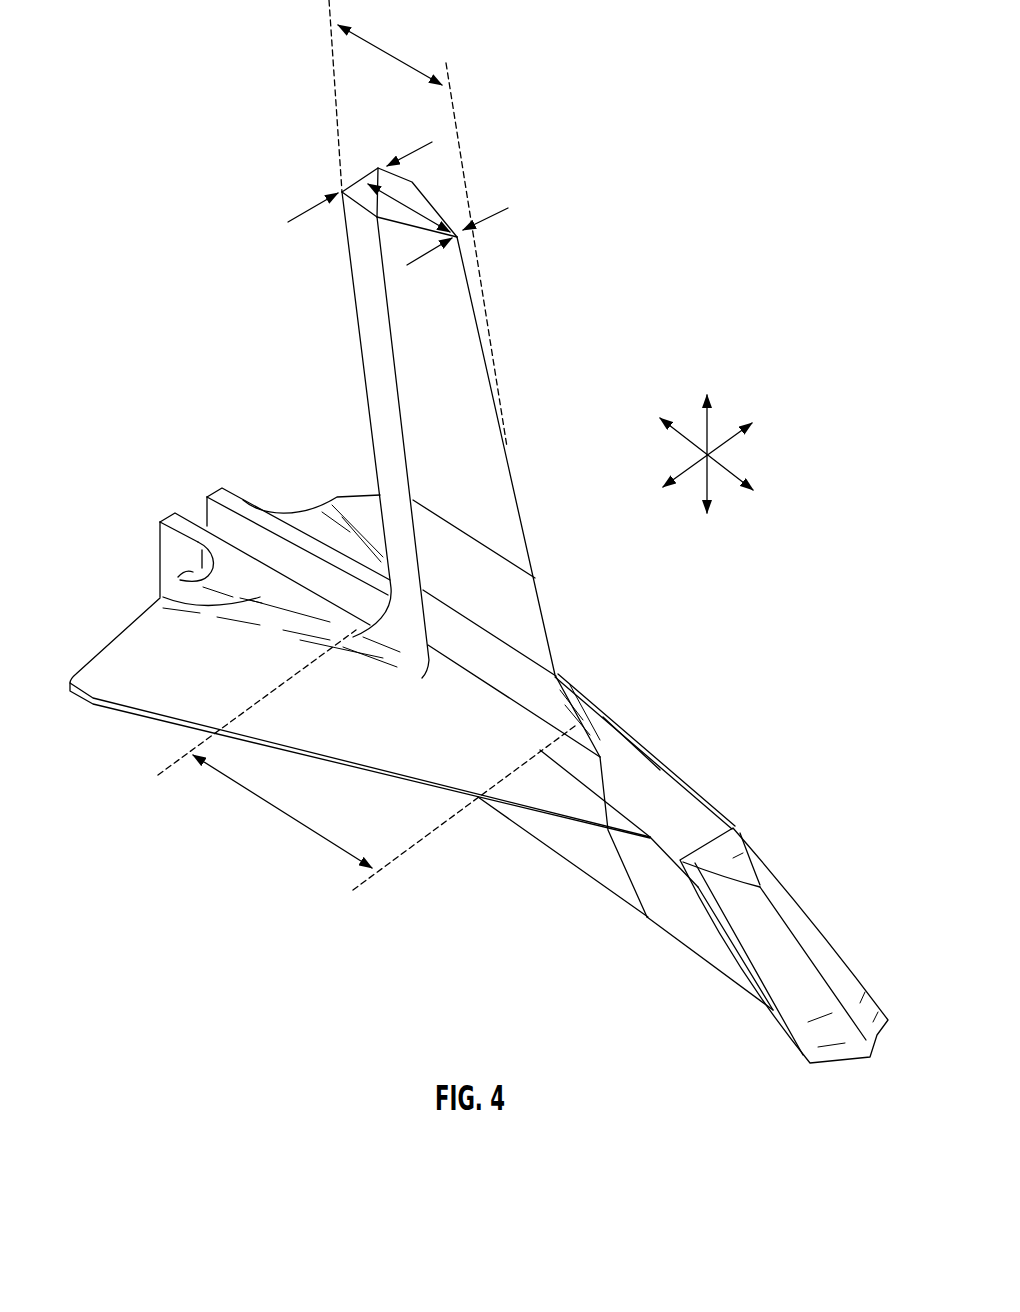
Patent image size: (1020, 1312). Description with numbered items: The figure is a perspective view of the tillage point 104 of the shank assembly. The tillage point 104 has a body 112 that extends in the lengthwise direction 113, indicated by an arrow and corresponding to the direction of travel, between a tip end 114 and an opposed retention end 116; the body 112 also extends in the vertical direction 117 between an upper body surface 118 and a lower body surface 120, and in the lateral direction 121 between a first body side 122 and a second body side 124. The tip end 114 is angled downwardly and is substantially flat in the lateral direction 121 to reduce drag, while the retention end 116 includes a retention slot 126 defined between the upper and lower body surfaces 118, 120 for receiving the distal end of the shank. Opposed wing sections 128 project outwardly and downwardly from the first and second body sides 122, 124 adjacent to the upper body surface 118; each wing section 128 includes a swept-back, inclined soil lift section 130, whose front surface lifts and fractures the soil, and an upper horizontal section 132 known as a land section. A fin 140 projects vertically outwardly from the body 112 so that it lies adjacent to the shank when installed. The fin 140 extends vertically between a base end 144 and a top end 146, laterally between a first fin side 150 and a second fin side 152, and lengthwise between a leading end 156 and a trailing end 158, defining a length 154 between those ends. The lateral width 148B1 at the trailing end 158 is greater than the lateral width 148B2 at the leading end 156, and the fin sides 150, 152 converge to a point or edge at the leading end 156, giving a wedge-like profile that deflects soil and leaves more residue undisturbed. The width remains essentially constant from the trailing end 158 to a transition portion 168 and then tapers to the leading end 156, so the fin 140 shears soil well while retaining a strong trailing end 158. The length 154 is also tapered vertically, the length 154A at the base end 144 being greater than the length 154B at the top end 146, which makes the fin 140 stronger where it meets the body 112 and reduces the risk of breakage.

The tillage point 104 is at (720, 736).
The body 112 is at (638, 843).
The lengthwise direction 113 is at (725, 472).
The tip end 114 is at (871, 1060).
The retention end 116 is at (157, 545).
The vertical direction 117 is at (707, 418).
The upper body surface 118 is at (620, 777).
The lower body surface 120 is at (717, 970).
The lateral direction 121 is at (737, 440).
The first body side 122 is at (660, 918).
The second body side 124 is at (713, 826).
The retention slot 126 is at (235, 525).
The wing section 128 is at (117, 692).
The soil lift section 130 is at (488, 777).
The upper horizontal section 132 is at (162, 601).
The fin 140 is at (497, 513).
The base end 144 is at (587, 717).
The top end 146 is at (358, 192).
The lateral width at trailing end 148B1 is at (413, 163).
The lateral width at leading end 148B2 is at (488, 220).
The first fin side 150 is at (397, 270).
The second fin side 152 is at (440, 213).
The length 154 is at (380, 43).
The length at base end 154A is at (277, 813).
The length at top end 154B is at (388, 164).
The leading end 156 is at (507, 453).
The trailing end 158 is at (360, 342).
The transition portion 168 is at (400, 427).